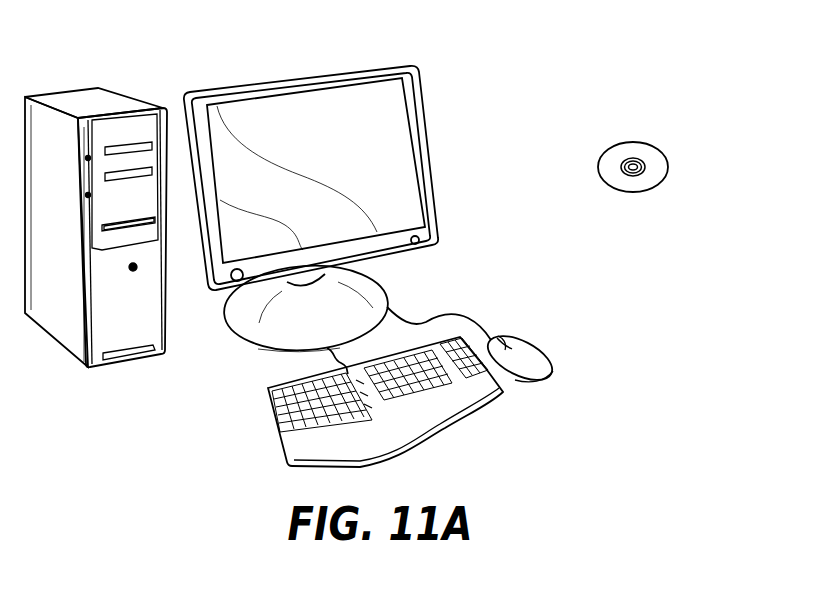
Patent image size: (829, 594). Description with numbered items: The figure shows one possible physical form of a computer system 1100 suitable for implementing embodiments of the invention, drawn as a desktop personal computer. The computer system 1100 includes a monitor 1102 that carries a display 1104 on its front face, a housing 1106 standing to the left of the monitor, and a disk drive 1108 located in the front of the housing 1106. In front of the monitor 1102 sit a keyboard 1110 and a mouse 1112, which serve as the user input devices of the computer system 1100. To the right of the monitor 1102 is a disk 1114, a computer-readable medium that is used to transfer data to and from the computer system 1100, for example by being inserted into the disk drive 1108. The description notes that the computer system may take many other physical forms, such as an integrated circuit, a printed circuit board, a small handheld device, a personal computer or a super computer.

The computer system 1100 is at (556, 46).
The monitor 1102 is at (432, 175).
The display 1104 is at (383, 110).
The housing 1106 is at (80, 98).
The disk drive 1108 is at (147, 223).
The keyboard 1110 is at (282, 440).
The mouse 1112 is at (540, 350).
The disk 1114 is at (652, 143).